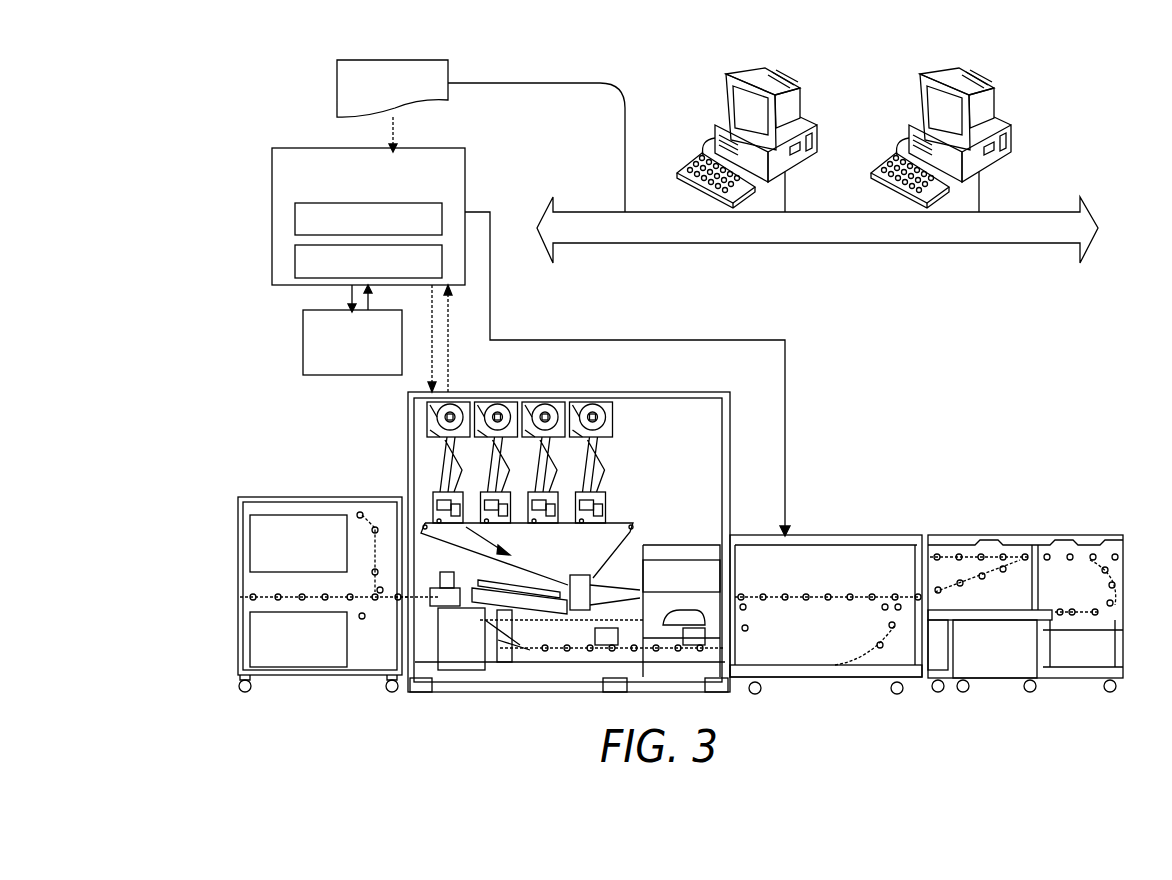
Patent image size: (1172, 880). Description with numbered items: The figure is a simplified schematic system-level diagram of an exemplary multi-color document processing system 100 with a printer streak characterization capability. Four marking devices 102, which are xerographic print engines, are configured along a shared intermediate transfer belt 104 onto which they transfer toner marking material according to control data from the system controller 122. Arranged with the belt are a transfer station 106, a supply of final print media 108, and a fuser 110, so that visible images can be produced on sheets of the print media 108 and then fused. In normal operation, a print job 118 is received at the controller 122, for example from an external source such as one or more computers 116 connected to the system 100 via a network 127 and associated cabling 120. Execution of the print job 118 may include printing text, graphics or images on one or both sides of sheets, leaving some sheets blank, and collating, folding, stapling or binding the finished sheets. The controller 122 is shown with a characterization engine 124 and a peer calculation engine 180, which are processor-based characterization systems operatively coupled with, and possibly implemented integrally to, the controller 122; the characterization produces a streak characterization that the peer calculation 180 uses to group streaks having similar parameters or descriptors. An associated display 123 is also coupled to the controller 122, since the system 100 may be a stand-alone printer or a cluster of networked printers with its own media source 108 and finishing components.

The printing system 100 is at (408, 421).
The marking devices 102 is at (580, 506).
The intermediate transfer belt 104 is at (471, 548).
The transfer station 106 is at (573, 568).
The print media 108 is at (292, 572).
The fuser 110 is at (730, 577).
The computers 116 is at (806, 99).
The print job 118 is at (448, 73).
The cabling 120 is at (622, 185).
The system controller 122 is at (272, 196).
The display 123 is at (303, 342).
The characterization engine 124 is at (319, 204).
The digital network 127 is at (830, 244).
The peer calculation engine 180 is at (295, 262).